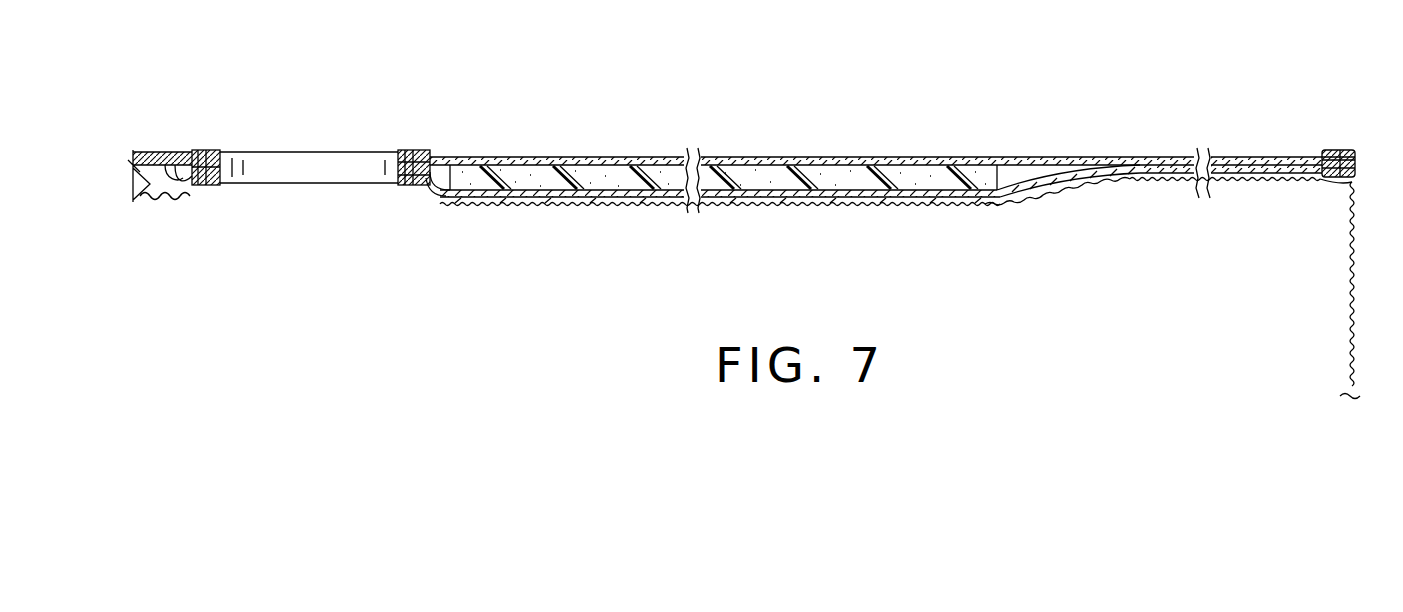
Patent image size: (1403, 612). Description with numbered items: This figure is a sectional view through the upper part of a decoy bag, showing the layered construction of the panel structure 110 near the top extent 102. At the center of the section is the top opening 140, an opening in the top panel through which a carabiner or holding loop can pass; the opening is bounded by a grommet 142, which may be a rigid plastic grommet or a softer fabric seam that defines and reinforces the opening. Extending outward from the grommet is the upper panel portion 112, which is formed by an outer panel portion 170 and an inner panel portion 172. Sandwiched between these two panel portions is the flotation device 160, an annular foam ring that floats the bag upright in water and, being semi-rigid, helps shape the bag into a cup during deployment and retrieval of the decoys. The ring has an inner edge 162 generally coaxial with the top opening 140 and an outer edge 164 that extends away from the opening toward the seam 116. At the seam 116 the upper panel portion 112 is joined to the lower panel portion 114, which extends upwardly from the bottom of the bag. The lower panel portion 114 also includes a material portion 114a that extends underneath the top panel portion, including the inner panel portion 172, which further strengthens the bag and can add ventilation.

The top extent 102 is at (437, 152).
The panel structure 110 is at (1246, 153).
The upper panel portion 112 is at (1073, 155).
The lower panel portion 114 is at (1350, 300).
The material portion 114a is at (900, 207).
The seam 116 is at (1362, 152).
The top opening 140 is at (295, 170).
The grommet 142 is at (394, 150).
The flotation device 160 is at (778, 175).
The inner edge 162 is at (435, 188).
The outer edge 164 is at (1018, 165).
The outer panel portion 170 is at (630, 152).
The inner panel portion 172 is at (598, 196).